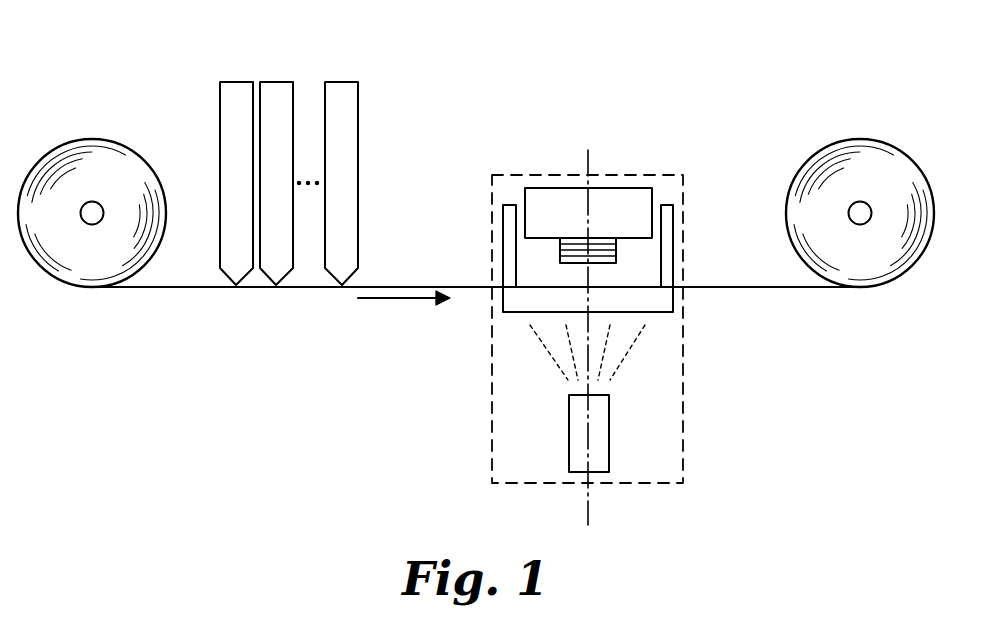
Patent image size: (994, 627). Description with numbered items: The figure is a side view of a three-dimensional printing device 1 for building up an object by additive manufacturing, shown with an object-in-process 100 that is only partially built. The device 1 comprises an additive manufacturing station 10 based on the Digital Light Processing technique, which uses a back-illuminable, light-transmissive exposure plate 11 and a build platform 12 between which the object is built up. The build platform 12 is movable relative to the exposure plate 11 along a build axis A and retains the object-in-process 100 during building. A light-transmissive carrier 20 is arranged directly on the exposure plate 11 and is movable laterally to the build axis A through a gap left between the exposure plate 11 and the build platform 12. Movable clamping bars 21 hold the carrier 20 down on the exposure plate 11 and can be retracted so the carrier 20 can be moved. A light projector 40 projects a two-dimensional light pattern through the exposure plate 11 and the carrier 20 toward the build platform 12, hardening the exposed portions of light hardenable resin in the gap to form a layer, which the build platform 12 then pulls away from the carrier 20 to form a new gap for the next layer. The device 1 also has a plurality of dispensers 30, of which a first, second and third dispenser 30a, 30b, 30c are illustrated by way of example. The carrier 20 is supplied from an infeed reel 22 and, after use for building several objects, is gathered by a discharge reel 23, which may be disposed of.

The 3D printing device 1 is at (712, 63).
The additive manufacturing station 10 is at (685, 453).
The exposure plate 11 is at (662, 300).
The build platform 12 is at (630, 200).
The carrier 20 is at (156, 290).
The clamping bars 21 is at (508, 228).
The infeed reel 22 is at (93, 150).
The discharge reel 23 is at (864, 150).
The dispensers 30 is at (221, 70).
The first dispenser 30a is at (232, 272).
The second dispenser 30b is at (272, 272).
The third dispenser 30c is at (337, 272).
The light projector 40 is at (595, 425).
The object-in-process 100 is at (610, 250).
The build axis A is at (590, 512).